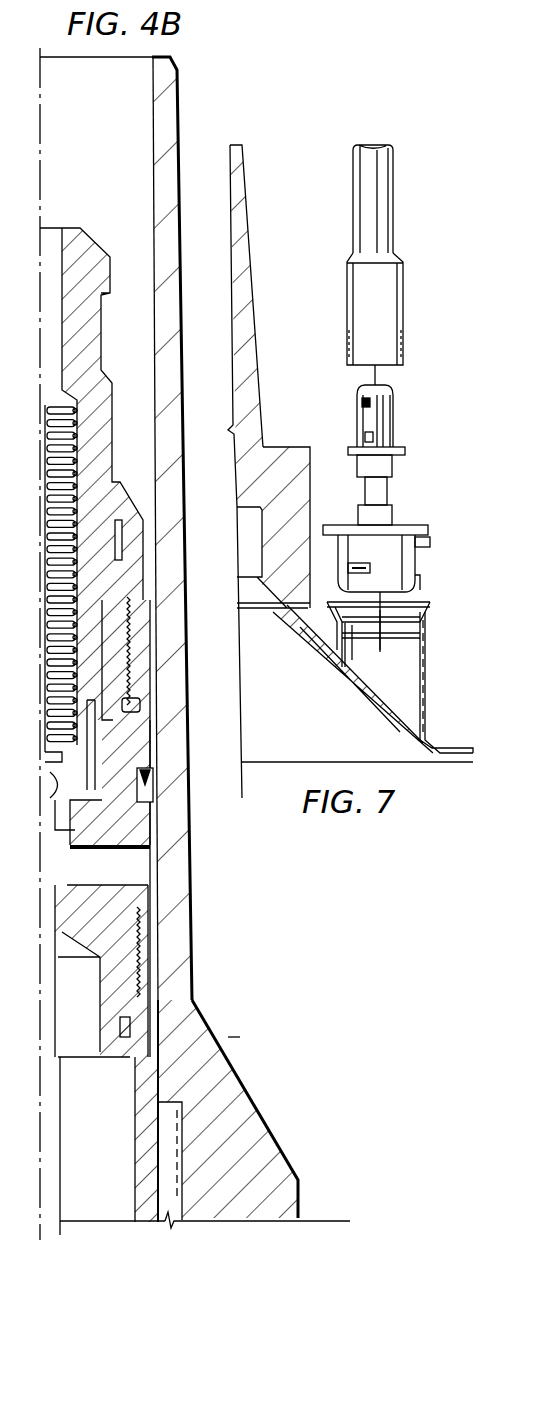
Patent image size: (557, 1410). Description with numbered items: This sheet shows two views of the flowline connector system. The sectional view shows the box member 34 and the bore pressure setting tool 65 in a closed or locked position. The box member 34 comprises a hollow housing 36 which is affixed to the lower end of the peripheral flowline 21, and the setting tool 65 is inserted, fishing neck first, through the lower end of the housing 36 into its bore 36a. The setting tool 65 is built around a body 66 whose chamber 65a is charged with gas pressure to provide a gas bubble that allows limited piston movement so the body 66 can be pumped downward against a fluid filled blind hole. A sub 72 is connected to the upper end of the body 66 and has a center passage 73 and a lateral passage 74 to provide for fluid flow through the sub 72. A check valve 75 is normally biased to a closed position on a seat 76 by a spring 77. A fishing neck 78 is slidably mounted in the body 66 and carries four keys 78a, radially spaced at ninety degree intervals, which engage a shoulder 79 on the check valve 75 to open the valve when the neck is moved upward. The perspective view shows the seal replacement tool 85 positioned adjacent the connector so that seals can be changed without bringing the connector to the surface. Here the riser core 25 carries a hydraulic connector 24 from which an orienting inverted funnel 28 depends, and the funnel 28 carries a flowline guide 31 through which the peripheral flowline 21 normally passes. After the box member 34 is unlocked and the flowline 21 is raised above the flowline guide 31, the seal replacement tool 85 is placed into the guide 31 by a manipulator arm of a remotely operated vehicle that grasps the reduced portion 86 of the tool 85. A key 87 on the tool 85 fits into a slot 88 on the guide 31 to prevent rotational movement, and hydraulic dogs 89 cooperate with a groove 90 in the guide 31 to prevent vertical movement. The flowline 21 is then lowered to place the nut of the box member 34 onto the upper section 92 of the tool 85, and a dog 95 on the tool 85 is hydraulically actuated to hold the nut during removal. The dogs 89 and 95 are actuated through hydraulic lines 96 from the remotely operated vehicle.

In FIG. 4B, the bore pressure setting tool 65 is at (123, 377).
In FIG. 4B, the fishing neck 78 is at (110, 293).
In FIG. 4B, the spring 77 is at (70, 483).
In FIG. 4B, the shoulder 79 is at (108, 672).
In FIG. 4B, the keys 78a is at (141, 700).
In FIG. 4B, the check valve 75 is at (96, 748).
In FIG. 4B, the sub 72 is at (136, 761).
In FIG. 4B, the center passage 73 is at (85, 800).
In FIG. 4B, the lateral passage 74 is at (140, 858).
In FIG. 4B, the seat 76 is at (96, 852).
In FIG. 4B, the body 66 is at (145, 960).
In FIG. 4B, the box member 34 is at (229, 1034).
In FIG. 7, the box member 34 is at (393, 313).
In FIG. 4B, the hollow housing 36 is at (267, 1122).
In FIG. 4B, the bore 36a is at (182, 1158).
In FIG. 4B, the chamber 65a is at (113, 1117).
In FIG. 7, the peripheral flowline 21 is at (388, 237).
In FIG. 7, the riser core 25 is at (262, 388).
In FIG. 7, the hydraulic connector 24 is at (275, 448).
In FIG. 7, the orienting inverted funnel 28 is at (300, 628).
In FIG. 7, the upper section 92 is at (387, 423).
In FIG. 7, the dog 95 is at (361, 403).
In FIG. 7, the reduced portion 86 is at (365, 487).
In FIG. 7, the seal replacement tool 85 is at (406, 496).
In FIG. 7, the key 87 is at (428, 547).
In FIG. 7, the hydraulic lines 96 is at (428, 523).
In FIG. 7, the hydraulic dogs 89 is at (348, 560).
In FIG. 7, the slot 88 is at (430, 603).
In FIG. 7, the groove 90 is at (417, 637).
In FIG. 7, the flowline guide 31 is at (425, 685).